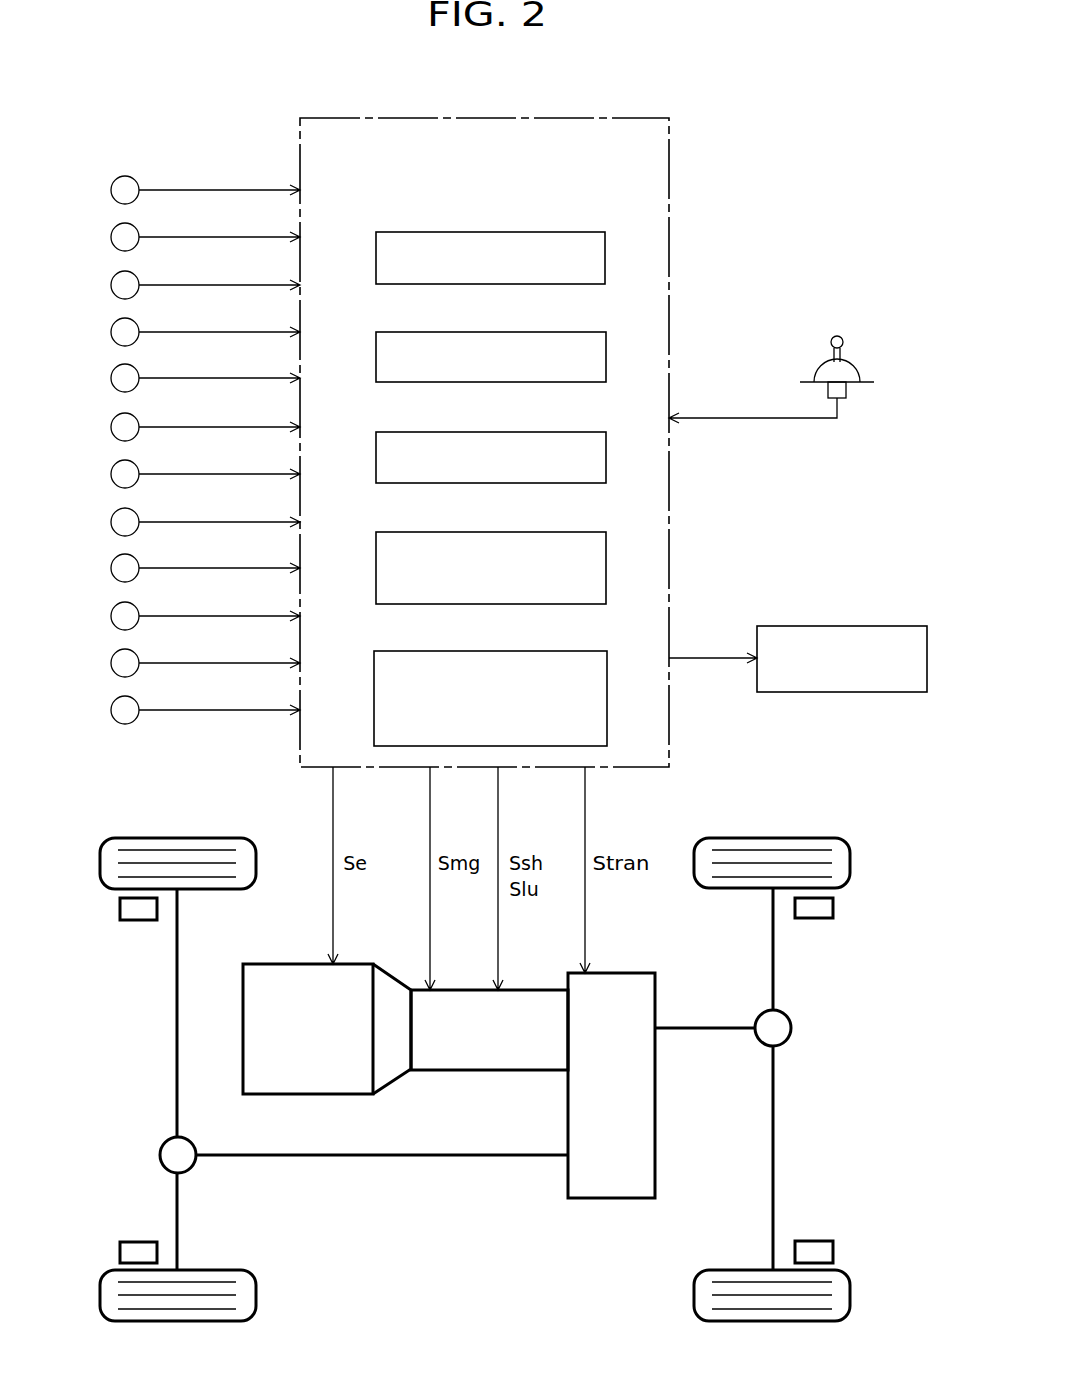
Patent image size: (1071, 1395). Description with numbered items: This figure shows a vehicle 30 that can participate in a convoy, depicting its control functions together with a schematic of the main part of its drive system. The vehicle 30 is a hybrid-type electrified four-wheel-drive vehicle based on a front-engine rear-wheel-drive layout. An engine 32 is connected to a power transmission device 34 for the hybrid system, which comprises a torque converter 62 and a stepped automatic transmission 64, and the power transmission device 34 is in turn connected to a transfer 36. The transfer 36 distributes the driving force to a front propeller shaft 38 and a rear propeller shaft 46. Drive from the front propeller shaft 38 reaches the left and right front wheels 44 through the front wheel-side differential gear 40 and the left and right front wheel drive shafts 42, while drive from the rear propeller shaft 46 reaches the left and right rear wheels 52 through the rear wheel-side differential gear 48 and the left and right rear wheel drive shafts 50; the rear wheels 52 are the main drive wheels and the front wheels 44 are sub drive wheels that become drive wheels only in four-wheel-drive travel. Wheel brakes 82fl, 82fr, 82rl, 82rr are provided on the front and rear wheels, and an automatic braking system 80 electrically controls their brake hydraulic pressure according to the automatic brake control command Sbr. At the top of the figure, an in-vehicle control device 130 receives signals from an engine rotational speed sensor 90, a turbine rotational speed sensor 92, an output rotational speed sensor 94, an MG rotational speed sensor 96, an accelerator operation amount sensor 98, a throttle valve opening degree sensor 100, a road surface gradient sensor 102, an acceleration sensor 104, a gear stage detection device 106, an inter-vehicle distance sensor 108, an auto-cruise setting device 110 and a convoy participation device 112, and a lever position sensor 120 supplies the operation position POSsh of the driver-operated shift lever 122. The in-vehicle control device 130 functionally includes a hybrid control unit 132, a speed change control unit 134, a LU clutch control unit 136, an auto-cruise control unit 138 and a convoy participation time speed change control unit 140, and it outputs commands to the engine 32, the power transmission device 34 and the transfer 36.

The vehicle 30 is at (766, 100).
The in-vehicle control device 130 is at (575, 128).
The hybrid control unit 132 is at (540, 240).
The speed change control unit 134 is at (540, 338).
The LU clutch control unit 136 is at (540, 438).
The auto-cruise control unit 138 is at (540, 538).
The convoy participation time speed change control unit 140 is at (540, 658).
The engine rotational speed sensor 90 is at (111, 190).
The turbine rotational speed sensor 92 is at (111, 237).
The output rotational speed sensor 94 is at (111, 285).
The MG rotational speed sensor 96 is at (111, 332).
The accelerator operation amount sensor 98 is at (111, 378).
The throttle valve opening degree sensor 100 is at (111, 427).
The road surface gradient sensor 102 is at (111, 474).
The acceleration sensor 104 is at (111, 522).
The gear stage detection device 106 is at (111, 568).
The inter-vehicle distance sensor 108 is at (111, 616).
The auto-cruise setting device 110 is at (111, 663).
The convoy participation device 112 is at (111, 710).
The lever position sensor 120 is at (790, 355).
The shift lever 122 is at (835, 334).
The automatic braking system 80 is at (855, 630).
The engine 32 is at (278, 973).
The power transmission device 34 is at (470, 1059).
The torque converter 62 is at (396, 1063).
The automatic transmission 64 is at (489, 1054).
The transfer 36 is at (620, 988).
The front propeller shaft 38 is at (392, 1158).
The front wheel-side differential gear 40 is at (170, 1152).
The front wheel drive shaft 42 is at (175, 1003).
The front wheel 44 is at (147, 845).
The rear propeller shaft 46 is at (703, 1025).
The rear wheel-side differential gear 48 is at (780, 1031).
The rear wheel drive shaft 50 is at (770, 933).
The rear wheel 52 is at (755, 845).
The wheel brake 82fr is at (128, 910).
The wheel brake 82rr is at (833, 907).
The wheel brake 82fl is at (128, 1253).
The wheel brake 82rl is at (833, 1252).